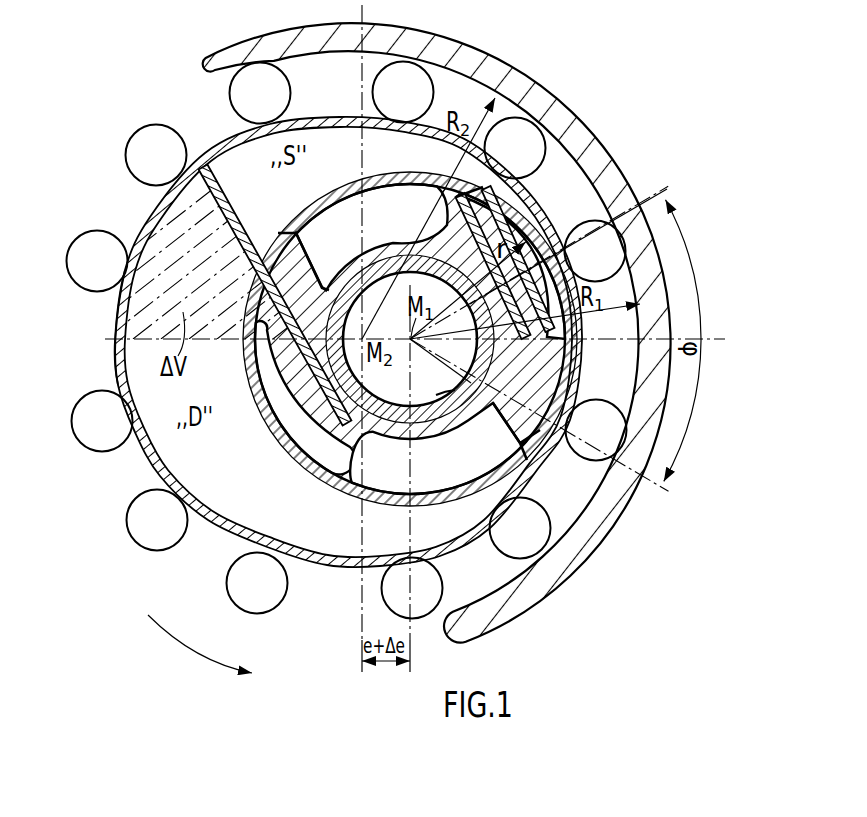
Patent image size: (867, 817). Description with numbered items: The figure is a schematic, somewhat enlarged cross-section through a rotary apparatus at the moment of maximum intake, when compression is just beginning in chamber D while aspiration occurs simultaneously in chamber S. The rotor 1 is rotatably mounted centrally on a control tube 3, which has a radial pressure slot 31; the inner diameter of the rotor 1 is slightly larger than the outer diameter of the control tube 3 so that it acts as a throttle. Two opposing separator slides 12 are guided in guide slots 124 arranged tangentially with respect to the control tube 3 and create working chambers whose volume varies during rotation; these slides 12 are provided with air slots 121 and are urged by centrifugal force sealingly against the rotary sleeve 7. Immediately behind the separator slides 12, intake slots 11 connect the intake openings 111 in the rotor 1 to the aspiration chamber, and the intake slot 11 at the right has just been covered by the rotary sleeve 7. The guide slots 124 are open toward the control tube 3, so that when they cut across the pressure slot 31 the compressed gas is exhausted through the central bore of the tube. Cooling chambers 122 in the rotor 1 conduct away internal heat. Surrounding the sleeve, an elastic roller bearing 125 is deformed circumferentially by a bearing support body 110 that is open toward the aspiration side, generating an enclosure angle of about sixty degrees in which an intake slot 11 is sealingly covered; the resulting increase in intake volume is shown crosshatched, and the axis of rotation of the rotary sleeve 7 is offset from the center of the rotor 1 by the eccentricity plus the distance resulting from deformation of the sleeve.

The rotor 1 is at (258, 421).
The control tube 3 is at (378, 409).
The rotary sleeve 7 is at (128, 303).
The intake slot 11 is at (272, 237).
The separator slide 12 is at (236, 207).
The pressure slot 31 is at (449, 402).
The bearing support body 110 is at (490, 70).
The intake opening 111 is at (334, 219).
The air slot 121 is at (236, 224).
The cooling chamber 122 is at (311, 440).
The guide slot 124 is at (330, 374).
The elastic roller bearing 125 is at (148, 133).